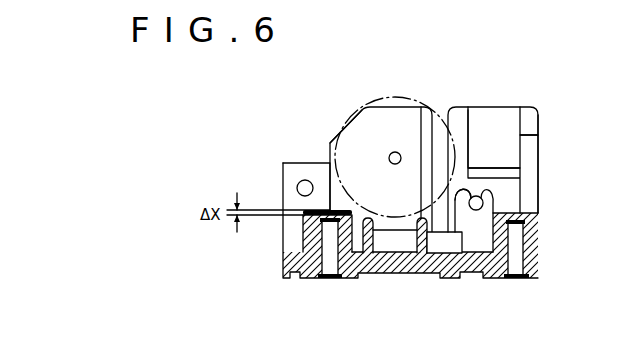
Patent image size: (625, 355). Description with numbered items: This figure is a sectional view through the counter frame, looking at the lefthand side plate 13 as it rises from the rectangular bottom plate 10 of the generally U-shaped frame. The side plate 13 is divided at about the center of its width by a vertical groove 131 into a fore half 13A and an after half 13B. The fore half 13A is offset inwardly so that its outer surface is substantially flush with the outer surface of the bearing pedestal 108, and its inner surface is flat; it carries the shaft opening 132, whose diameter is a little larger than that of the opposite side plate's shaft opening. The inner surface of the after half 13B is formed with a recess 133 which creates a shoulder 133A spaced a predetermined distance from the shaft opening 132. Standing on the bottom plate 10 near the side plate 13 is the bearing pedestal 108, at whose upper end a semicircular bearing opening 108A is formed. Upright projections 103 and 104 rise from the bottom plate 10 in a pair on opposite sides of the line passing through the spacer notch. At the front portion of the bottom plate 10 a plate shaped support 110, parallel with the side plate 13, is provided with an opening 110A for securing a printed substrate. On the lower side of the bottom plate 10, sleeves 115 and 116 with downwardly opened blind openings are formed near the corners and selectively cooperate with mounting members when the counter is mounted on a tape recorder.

The bottom plate 10 is at (473, 268).
The lefthand side plate 13 is at (368, 130).
The fore half of lefthand side plate 13A is at (333, 140).
The after half of lefthand side plate 13B is at (540, 137).
The upright projection 103 is at (423, 240).
The upright projection 104 is at (366, 240).
The bearing pedestal 108 is at (488, 200).
The semicircular bearing opening 108A is at (472, 187).
The plate shaped support 110 is at (293, 167).
The opening 110A is at (300, 188).
The sleeve 115 is at (535, 242).
The sleeve 116 is at (310, 233).
The vertical groove 131 is at (440, 108).
The shaft opening 132 is at (396, 151).
The recess 133 is at (503, 130).
The shoulder 133A is at (475, 130).